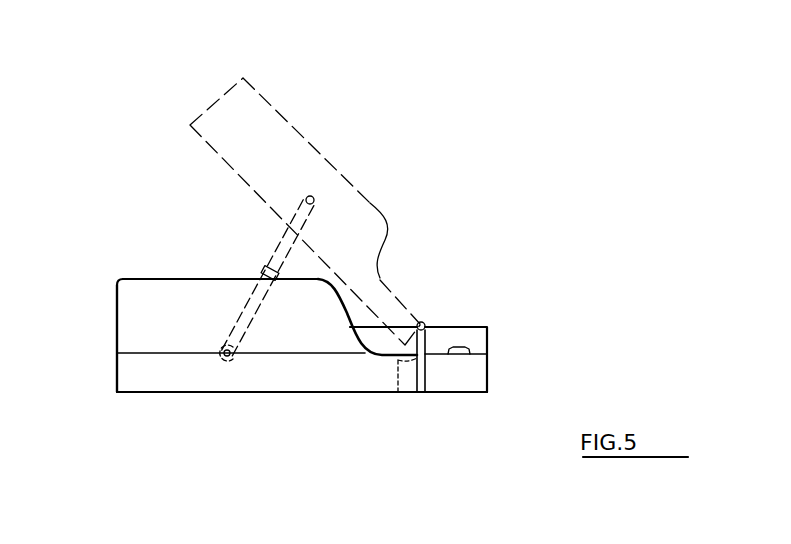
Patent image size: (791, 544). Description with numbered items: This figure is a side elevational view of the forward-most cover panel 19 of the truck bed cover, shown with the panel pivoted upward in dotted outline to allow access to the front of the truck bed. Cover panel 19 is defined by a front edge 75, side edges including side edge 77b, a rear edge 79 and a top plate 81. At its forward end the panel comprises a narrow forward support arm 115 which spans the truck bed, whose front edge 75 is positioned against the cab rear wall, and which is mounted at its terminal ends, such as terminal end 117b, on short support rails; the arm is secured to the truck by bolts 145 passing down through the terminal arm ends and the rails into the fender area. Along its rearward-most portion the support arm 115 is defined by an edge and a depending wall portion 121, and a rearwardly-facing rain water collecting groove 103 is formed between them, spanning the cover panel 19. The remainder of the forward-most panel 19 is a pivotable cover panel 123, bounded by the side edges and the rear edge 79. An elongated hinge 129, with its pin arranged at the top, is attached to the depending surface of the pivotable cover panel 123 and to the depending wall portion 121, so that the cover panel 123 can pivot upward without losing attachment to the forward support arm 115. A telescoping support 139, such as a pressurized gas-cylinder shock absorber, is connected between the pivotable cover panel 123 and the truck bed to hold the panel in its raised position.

The forward-most cover panel 19 is at (137, 278).
The top plate 81 is at (212, 278).
The rear edge 79 is at (117, 315).
The side edge 77b is at (158, 383).
The forward support arm 115 is at (488, 336).
The front edge 75 is at (488, 362).
The terminal end 117b is at (456, 382).
The bolt 145 is at (462, 347).
The depending wall portion 121 is at (430, 343).
The elongated hinge 129 is at (421, 322).
The rain water collecting groove 103 is at (398, 362).
The telescoping support 139 is at (284, 260).
The pivotable cover panel 123 is at (312, 142).